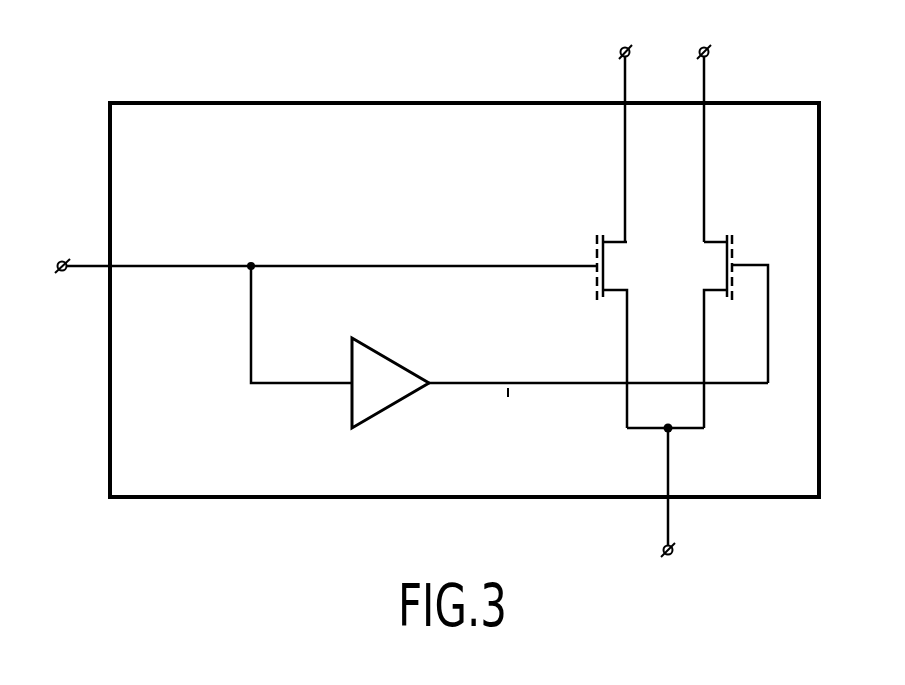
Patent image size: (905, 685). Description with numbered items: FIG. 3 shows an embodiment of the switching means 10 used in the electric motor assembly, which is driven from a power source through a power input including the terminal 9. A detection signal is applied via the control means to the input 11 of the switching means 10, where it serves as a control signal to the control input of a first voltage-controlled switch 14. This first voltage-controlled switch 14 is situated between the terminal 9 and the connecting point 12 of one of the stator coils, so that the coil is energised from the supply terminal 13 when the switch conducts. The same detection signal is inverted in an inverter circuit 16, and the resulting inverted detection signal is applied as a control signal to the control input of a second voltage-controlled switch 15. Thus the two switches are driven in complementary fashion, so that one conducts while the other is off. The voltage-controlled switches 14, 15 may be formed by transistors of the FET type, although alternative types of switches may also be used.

The terminal 9 is at (673, 551).
The switching means 10 is at (240, 103).
The input 11 is at (63, 272).
The connecting point 12 is at (620, 51).
The supply terminal 13 is at (709, 52).
The first voltage-controlled switch 14 is at (608, 299).
The second voltage-controlled switch 15 is at (723, 299).
The inverter circuit 16 is at (370, 418).